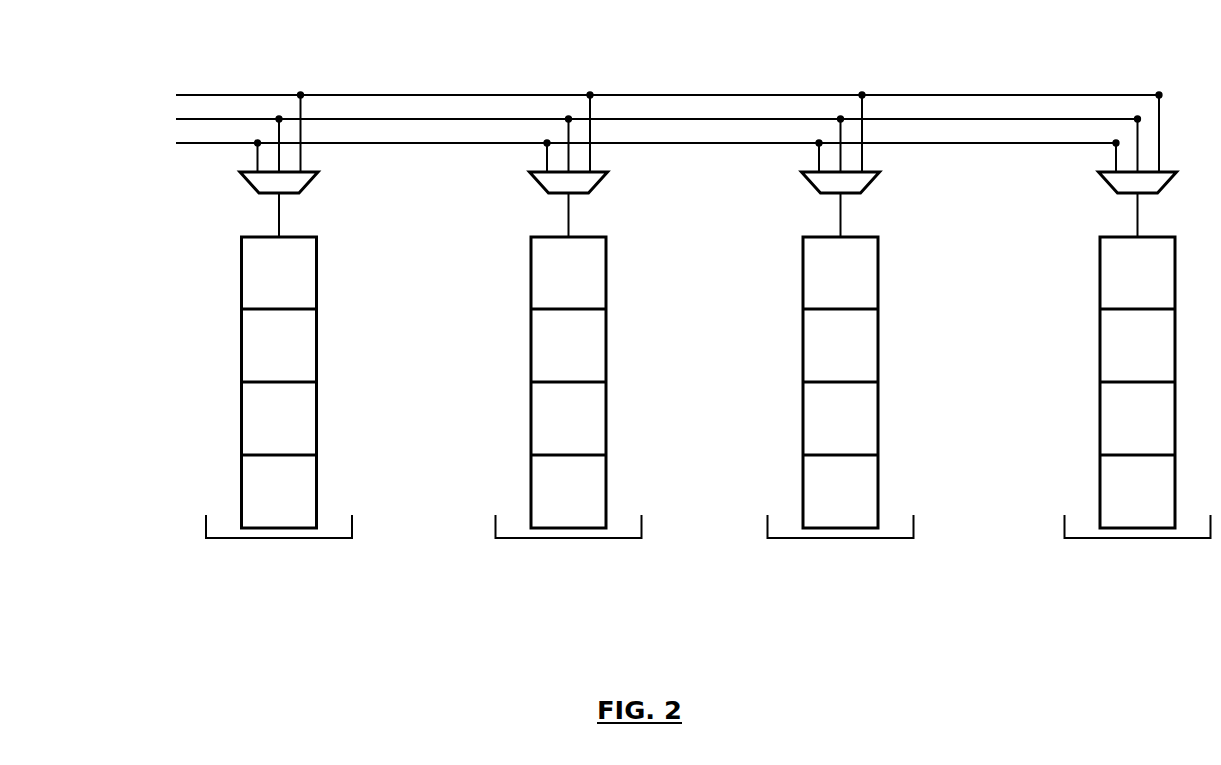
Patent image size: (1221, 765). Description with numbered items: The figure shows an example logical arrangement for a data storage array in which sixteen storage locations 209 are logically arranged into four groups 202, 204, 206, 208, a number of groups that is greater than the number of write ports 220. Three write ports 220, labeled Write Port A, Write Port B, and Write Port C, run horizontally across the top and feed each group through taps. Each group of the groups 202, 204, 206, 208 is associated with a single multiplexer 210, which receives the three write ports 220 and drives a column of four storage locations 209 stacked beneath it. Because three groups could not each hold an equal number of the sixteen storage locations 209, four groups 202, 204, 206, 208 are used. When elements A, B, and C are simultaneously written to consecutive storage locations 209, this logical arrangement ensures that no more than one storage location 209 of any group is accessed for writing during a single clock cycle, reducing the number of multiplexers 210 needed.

The group 202 is at (276, 359).
The group 204 is at (569, 359).
The group 206 is at (841, 359).
The group 208 is at (1138, 359).
The storage locations 209 is at (261, 382).
The multiplexer 210 is at (259, 164).
The write ports 220 is at (609, 96).